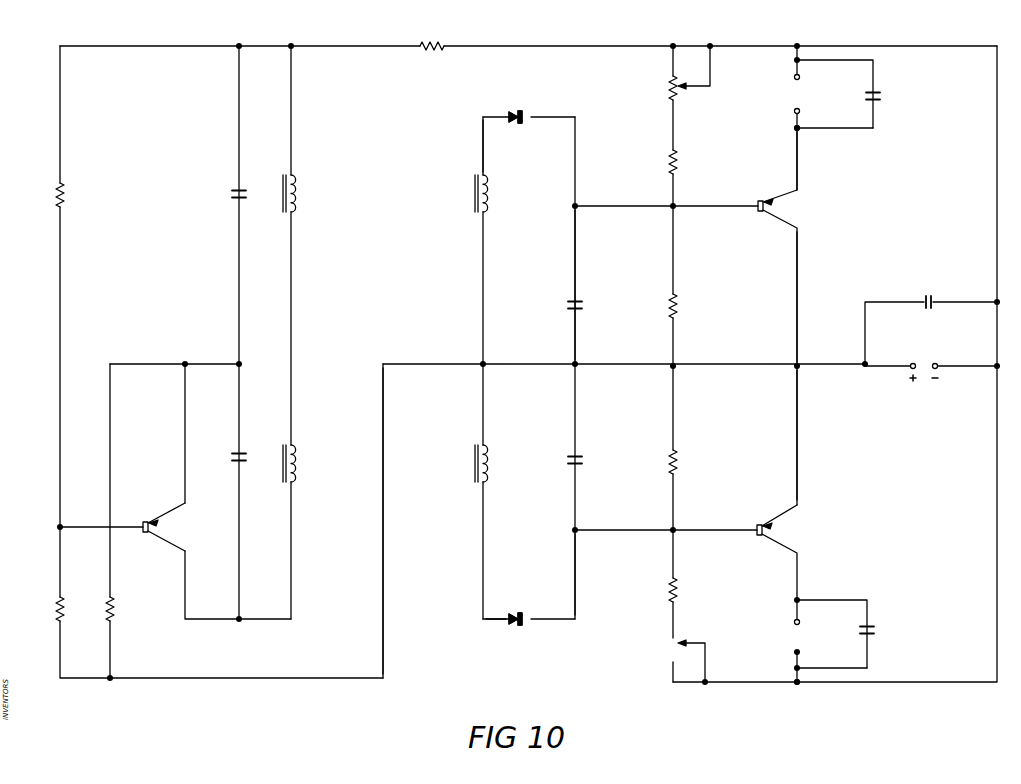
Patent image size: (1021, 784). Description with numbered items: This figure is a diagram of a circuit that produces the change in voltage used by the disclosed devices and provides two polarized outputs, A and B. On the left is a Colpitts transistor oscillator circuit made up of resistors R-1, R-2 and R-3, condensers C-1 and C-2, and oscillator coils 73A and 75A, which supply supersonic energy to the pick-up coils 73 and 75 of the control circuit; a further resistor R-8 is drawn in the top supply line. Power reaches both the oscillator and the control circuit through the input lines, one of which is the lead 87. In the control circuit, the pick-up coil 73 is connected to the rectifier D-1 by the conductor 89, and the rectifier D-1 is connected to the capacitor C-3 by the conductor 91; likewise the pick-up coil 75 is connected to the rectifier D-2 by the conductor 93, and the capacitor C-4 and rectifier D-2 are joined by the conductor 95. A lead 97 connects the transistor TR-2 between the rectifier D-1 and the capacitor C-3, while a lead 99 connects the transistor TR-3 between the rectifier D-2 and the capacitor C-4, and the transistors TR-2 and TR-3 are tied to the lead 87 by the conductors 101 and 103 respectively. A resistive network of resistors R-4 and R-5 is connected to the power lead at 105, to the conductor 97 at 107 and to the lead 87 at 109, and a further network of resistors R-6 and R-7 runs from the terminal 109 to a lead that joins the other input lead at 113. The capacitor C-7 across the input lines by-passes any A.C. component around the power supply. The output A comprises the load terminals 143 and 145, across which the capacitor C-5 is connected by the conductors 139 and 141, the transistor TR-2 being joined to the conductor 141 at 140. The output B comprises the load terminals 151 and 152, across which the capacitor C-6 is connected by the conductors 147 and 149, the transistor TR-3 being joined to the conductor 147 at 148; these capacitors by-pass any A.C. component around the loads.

The oscillator coil 73A is at (296, 181).
The oscillator coil 75A is at (296, 452).
The pick-up coil 73 is at (484, 177).
The pick-up coil 75 is at (488, 452).
The input line 87 is at (384, 660).
The conductor 89 is at (485, 147).
The conductor 91 is at (576, 245).
The conductor 93 is at (483, 620).
The conductor 95 is at (576, 585).
The lead 97 is at (729, 208).
The lead 99 is at (702, 532).
The conductor 101 is at (799, 327).
The conductor 103 is at (799, 434).
The connection point to power lead 105 is at (673, 42).
The connection point to conductor 97 107 is at (675, 205).
The terminal on lead 87 109 is at (674, 368).
The connection point to input lead 113 is at (798, 368).
The conductor 139 is at (845, 58).
The connection point on conductor 141 140 is at (799, 129).
The conductor 141 is at (859, 131).
The load terminal 143 is at (794, 77).
The load terminal 145 is at (795, 112).
The conductor 147 is at (857, 599).
The connection point on conductor 147 148 is at (799, 599).
The conductor 149 is at (823, 672).
The load terminal 151 is at (794, 621).
The load terminal 152 is at (795, 654).
The polarized output A is at (839, 153).
The polarized output B is at (793, 685).
The resistor R-1 is at (45, 194).
The resistor R-2 is at (41, 609).
The resistor R-3 is at (129, 609).
The resistor R-4 is at (654, 162).
The resistor R-5 is at (653, 305).
The resistor R-6 is at (652, 462).
The resistor R-7 is at (654, 589).
The resistor R-8 is at (438, 35).
The condenser C-1 is at (225, 193).
The condenser C-2 is at (224, 461).
The capacitor C-3 is at (558, 306).
The capacitor C-4 is at (559, 461).
The capacitor C-5 is at (891, 97).
The capacitor C-6 is at (886, 628).
The capacitor C-7 is at (931, 320).
The rectifier D-1 is at (528, 106).
The rectifier D-2 is at (528, 632).
The transistor TR-2 is at (791, 316).
The transistor TR-3 is at (789, 552).